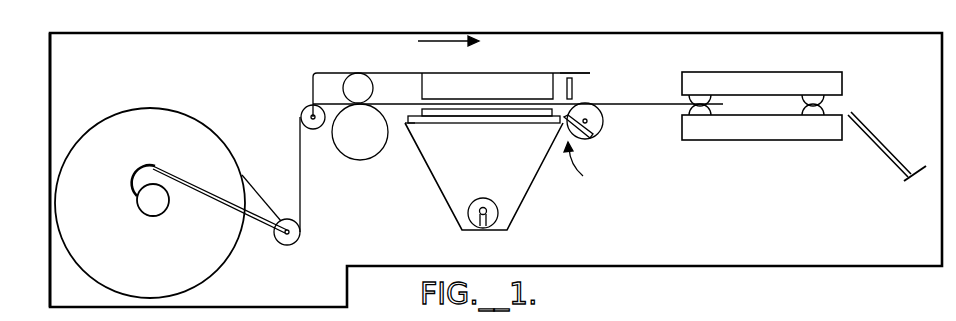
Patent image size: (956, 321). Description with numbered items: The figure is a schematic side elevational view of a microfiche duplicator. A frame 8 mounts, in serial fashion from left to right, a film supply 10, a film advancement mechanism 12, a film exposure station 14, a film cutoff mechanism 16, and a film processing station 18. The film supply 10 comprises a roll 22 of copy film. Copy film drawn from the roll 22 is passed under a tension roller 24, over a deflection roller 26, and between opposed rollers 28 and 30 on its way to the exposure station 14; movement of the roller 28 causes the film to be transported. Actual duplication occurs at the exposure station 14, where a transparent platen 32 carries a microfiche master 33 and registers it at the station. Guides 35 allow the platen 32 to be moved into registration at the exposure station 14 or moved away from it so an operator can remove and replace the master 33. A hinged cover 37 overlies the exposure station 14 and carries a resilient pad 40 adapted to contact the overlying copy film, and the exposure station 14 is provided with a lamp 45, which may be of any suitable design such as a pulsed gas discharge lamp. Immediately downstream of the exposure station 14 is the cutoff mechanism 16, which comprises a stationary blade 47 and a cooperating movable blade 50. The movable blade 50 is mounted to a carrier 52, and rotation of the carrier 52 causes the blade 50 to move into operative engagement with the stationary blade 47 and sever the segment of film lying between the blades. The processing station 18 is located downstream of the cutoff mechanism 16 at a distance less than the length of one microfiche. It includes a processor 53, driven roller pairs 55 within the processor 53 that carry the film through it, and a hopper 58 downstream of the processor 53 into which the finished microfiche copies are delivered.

The frame 8 is at (924, 34).
The film supply 10 is at (48, 62).
The film advancement mechanism 12 is at (360, 228).
The film exposure station 14 is at (531, 210).
The film cutoff mechanism 16 is at (587, 171).
The film processing station 18 is at (780, 141).
The roll 22 is at (101, 130).
The tension roller 24 is at (291, 243).
The deflection roller 26 is at (303, 111).
The roller 28 is at (355, 143).
The roller 30 is at (358, 85).
The transparent platen 32 is at (433, 123).
The microfiche master 33 is at (478, 117).
The guides 35 is at (404, 124).
The hinged cover 37 is at (510, 72).
The resilient pad 40 is at (460, 85).
The lamp 45 is at (498, 222).
The stationary blade 47 is at (573, 85).
The movable blade 50 is at (594, 140).
The carrier 52 is at (598, 130).
The processor 53 is at (785, 72).
The driven roller pairs 55 is at (702, 95).
The hopper 58 is at (899, 174).